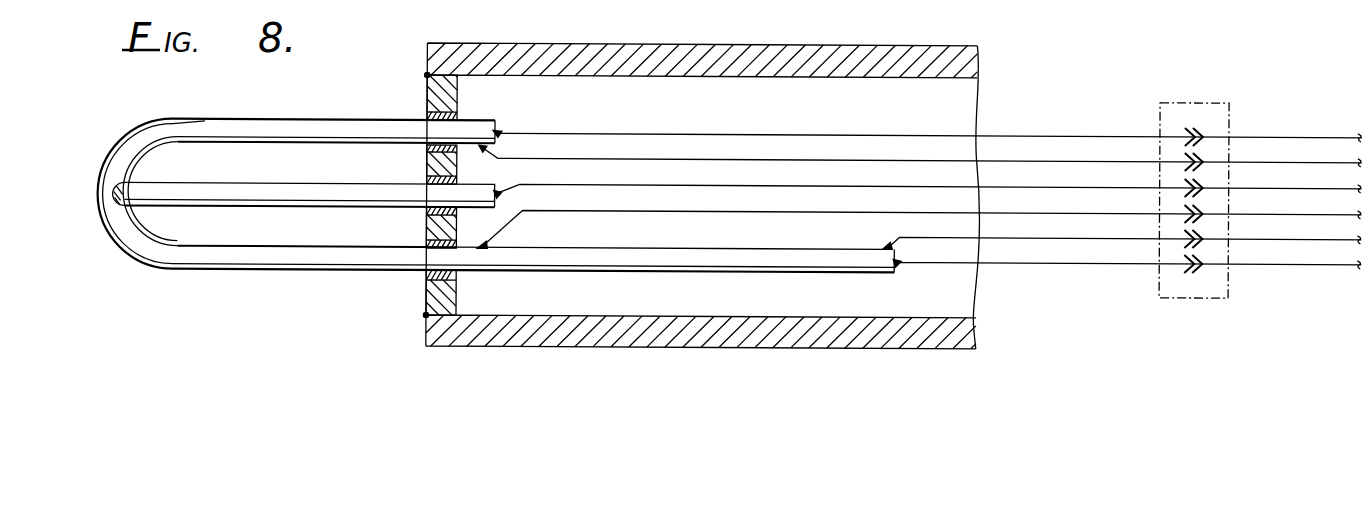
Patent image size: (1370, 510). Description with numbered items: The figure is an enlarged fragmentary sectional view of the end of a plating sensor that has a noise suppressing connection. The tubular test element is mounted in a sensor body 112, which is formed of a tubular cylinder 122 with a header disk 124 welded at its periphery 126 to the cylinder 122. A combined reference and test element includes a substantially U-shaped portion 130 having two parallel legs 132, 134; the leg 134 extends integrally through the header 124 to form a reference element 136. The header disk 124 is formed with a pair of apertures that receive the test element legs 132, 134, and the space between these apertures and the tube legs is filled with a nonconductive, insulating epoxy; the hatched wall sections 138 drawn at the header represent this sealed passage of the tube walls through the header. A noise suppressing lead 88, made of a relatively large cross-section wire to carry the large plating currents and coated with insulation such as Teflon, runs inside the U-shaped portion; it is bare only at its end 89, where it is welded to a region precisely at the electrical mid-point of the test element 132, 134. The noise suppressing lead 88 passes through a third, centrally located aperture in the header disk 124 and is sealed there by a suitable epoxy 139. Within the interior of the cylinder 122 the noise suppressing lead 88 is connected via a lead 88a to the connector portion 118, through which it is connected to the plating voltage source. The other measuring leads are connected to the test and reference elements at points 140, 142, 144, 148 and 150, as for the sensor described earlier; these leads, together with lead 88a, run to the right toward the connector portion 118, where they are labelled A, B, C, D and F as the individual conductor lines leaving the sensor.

The sensor body 112 is at (548, 43).
The tubular cylinder 122 is at (652, 43).
The periphery 126 is at (427, 75).
The header disk 124 is at (427, 90).
The outer sheath wall section 138 is at (427, 116).
The epoxy 139 is at (427, 182).
The leg 132 is at (224, 119).
The U-shaped portion 130 is at (294, 103).
The leg 134 is at (301, 247).
The noise suppressing lead 88 is at (296, 184).
The end 89 is at (129, 183).
The connection point 140 is at (499, 130).
The connection point 144 is at (482, 148).
The lead 88a is at (752, 184).
The connection point 148 is at (499, 233).
The reference element 136 is at (653, 247).
The connection point 150 is at (887, 245).
The connection point 142 is at (898, 260).
The connector portion 118 is at (1198, 99).
The line A is at (1146, 133).
The line B is at (1146, 158).
The line C is at (1142, 208).
The line D is at (1144, 233).
The line F is at (1140, 258).